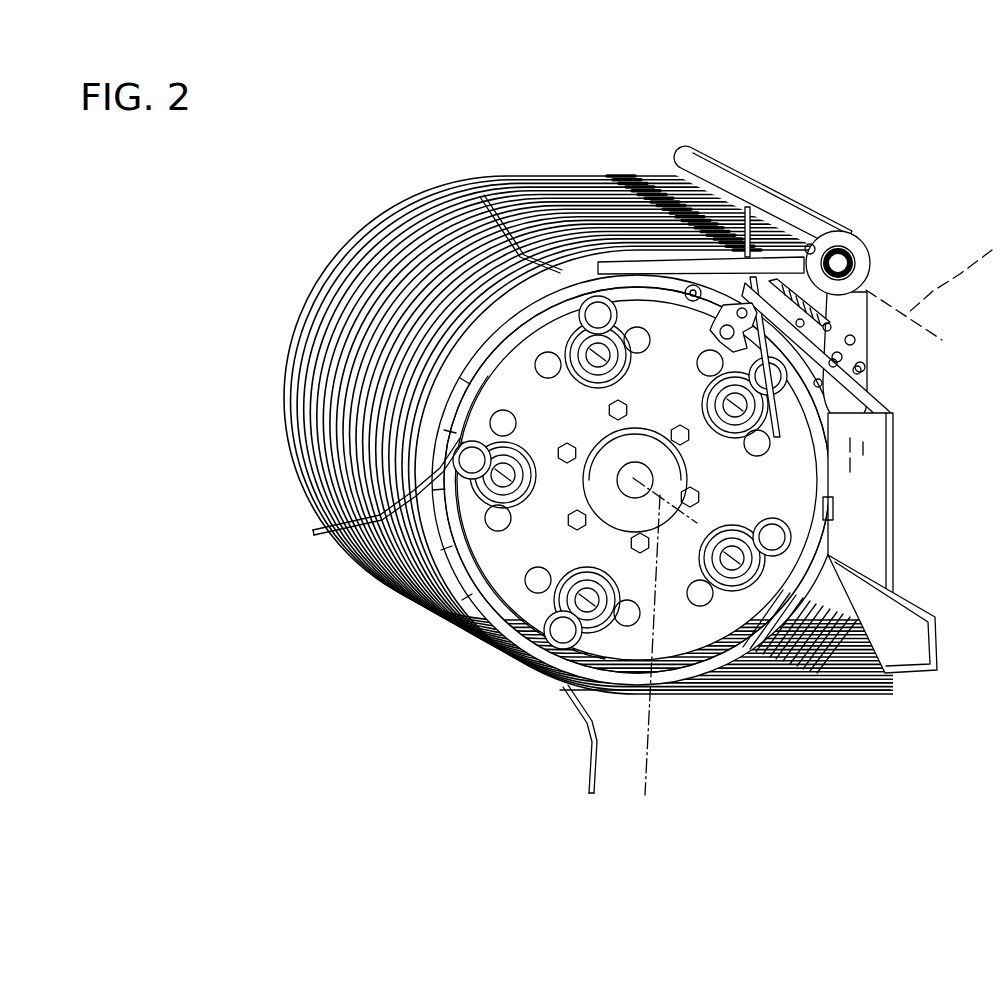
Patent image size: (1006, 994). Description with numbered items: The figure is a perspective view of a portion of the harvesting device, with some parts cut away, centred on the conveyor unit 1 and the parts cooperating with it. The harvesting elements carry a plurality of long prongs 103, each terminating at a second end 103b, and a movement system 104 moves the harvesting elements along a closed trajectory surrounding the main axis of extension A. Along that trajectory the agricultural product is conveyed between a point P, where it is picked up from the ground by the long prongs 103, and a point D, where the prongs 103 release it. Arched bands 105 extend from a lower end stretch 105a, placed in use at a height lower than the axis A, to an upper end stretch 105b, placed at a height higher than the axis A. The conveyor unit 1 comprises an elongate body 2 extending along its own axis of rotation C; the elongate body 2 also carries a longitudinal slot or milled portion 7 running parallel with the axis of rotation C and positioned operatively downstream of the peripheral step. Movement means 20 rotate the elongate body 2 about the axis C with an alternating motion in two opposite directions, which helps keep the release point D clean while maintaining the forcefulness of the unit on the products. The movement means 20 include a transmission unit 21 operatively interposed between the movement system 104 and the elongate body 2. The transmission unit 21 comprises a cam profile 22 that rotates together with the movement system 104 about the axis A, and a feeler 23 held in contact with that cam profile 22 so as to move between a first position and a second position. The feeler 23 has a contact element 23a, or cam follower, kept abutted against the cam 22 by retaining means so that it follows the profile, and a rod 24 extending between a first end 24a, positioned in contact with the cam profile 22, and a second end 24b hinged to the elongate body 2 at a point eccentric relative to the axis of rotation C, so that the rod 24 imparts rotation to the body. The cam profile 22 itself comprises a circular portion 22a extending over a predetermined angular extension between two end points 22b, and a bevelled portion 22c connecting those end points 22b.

The conveyor unit 1 is at (790, 182).
The elongate body 2 is at (882, 257).
The longitudinal slot or milled portion 7 is at (722, 232).
The movement means 20 is at (525, 400).
The transmission unit 21 is at (697, 325).
The cam profile 22 is at (477, 600).
The circular portion 22a is at (450, 425).
The end points 22b is at (578, 325).
The bevelled portion 22c is at (596, 300).
The feeler 23 is at (716, 257).
The contact element 23a is at (775, 487).
The rod 24 is at (858, 326).
The first end 24a is at (862, 405).
The second end 24b is at (852, 252).
The long prongs 103 is at (594, 798).
The second end 103b is at (310, 530).
The movement system 104 is at (675, 590).
The bands 105 is at (460, 597).
The lower end stretch 105a is at (783, 694).
The upper end stretch 105b is at (688, 262).
The main axis of extension A is at (665, 650).
The axis of rotation C is at (933, 278).
The release point D is at (835, 182).
The pick-up point P is at (566, 690).